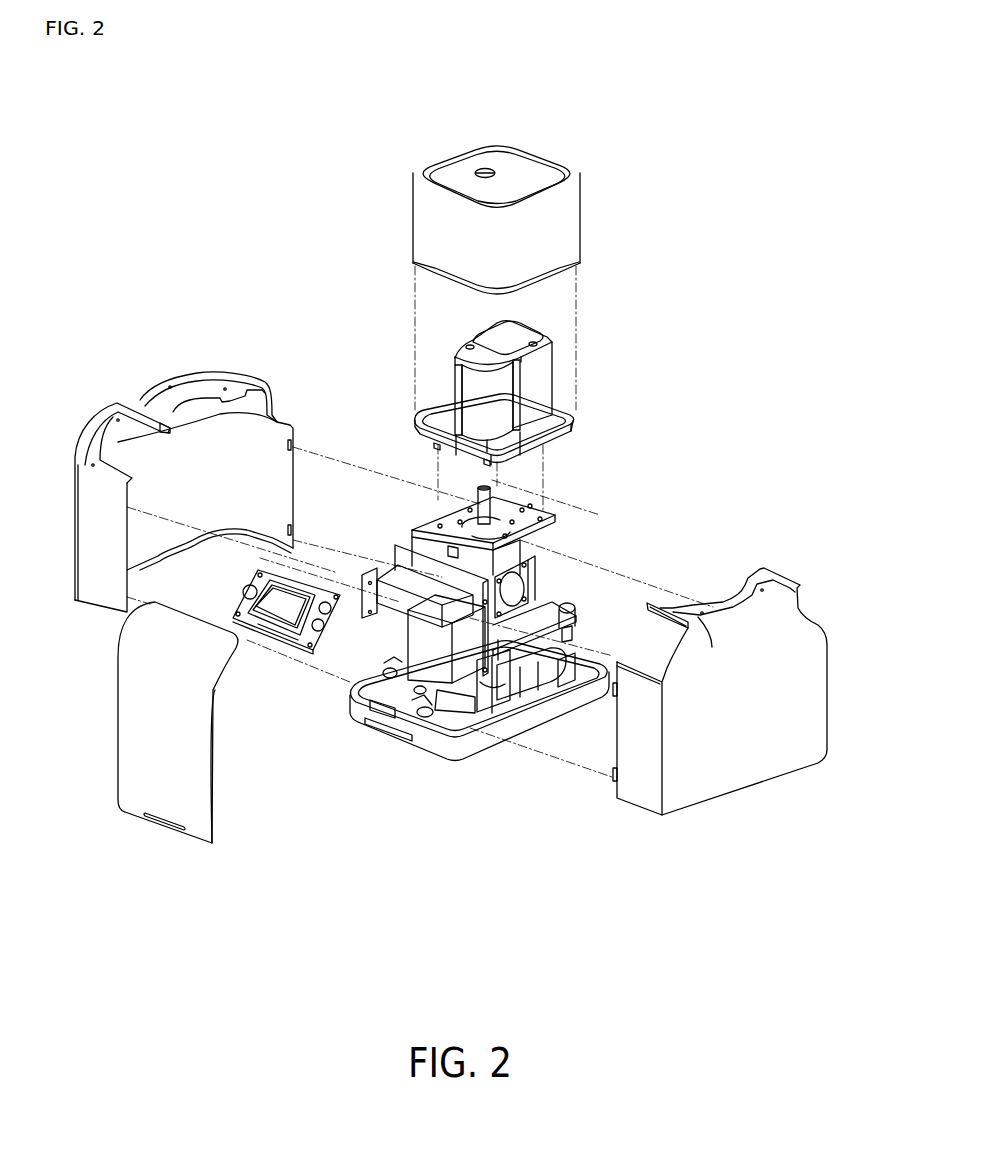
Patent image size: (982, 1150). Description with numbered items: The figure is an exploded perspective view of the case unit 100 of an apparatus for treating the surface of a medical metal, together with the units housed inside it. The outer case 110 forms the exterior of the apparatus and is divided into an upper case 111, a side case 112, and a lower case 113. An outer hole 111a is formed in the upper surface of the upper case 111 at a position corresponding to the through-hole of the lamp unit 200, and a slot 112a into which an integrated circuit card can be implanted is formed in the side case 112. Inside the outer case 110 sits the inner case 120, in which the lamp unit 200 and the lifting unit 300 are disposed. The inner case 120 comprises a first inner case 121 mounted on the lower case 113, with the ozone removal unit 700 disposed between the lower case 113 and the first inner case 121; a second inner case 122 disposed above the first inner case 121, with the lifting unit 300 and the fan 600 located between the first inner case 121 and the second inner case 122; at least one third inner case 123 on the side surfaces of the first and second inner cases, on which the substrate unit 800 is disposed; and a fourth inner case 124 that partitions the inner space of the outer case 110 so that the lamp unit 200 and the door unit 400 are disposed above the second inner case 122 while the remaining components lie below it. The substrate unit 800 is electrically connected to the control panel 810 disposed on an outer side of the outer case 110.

The case unit 100 is at (559, 936).
The outer case 110 is at (578, 965).
The upper case 111 is at (430, 212).
The outer hole 111a is at (484, 168).
The side case 112 is at (88, 592).
The slot 112a is at (162, 830).
The lower case 113 is at (523, 722).
The inner case 120 is at (597, 995).
The first inner case 121 is at (545, 613).
The second inner case 122 is at (423, 523).
The third inner case 123 is at (490, 693).
The fourth inner case 124 is at (577, 418).
The lamp unit 200 is at (502, 397).
The lifting unit 300 is at (493, 552).
The door unit 400 is at (545, 352).
The fan 600 is at (518, 583).
The ozone removal unit 700 is at (540, 680).
The substrate unit 800 is at (305, 644).
The control panel 810 is at (287, 612).